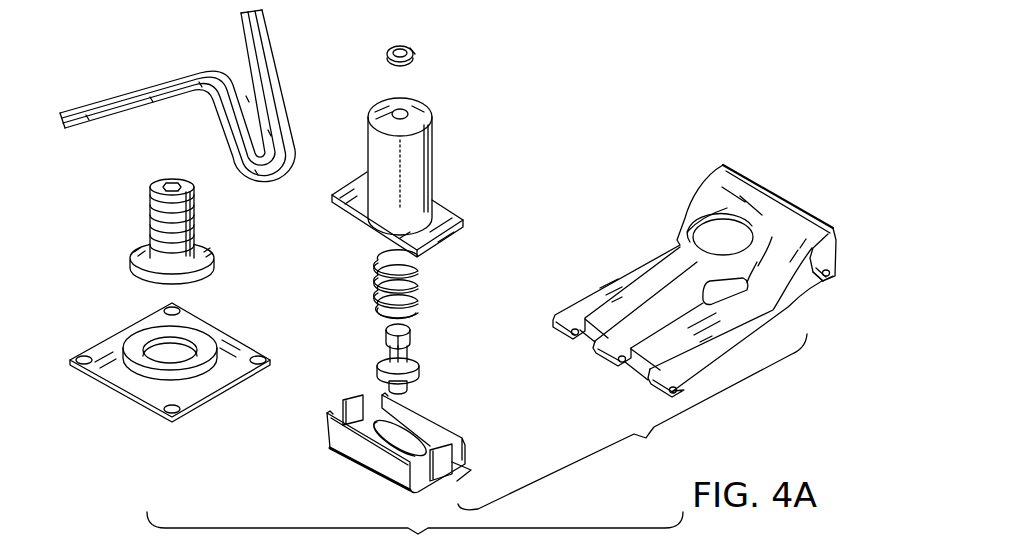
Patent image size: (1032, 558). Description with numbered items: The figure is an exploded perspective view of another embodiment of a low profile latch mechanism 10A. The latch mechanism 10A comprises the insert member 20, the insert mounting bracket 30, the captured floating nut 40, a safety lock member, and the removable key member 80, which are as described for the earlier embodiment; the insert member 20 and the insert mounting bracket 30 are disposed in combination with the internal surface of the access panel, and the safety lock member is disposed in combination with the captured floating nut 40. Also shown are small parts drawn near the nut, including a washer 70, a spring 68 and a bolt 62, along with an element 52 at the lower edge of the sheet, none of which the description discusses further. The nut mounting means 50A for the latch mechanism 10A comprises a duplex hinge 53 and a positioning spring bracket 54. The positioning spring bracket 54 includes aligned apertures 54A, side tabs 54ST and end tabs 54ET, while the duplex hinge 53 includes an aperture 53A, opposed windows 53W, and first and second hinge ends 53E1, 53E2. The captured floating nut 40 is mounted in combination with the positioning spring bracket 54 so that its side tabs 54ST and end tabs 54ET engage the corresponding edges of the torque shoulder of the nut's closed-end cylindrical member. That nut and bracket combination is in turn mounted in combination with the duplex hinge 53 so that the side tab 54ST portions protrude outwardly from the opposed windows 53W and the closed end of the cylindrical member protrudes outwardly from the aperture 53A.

The removable key member 80 is at (183, 68).
The insert member 20 is at (206, 231).
The insert mounting bracket 30 is at (232, 324).
The washer 70 is at (414, 52).
The captured floating nut 40 is at (444, 134).
The spring 68 is at (424, 302).
The bolt with washer 62 is at (411, 347).
The positioning spring bracket 54 is at (407, 431).
The end tabs 54ET is at (330, 440).
The side tabs 54ST is at (351, 397).
The aligned apertures 54A is at (426, 442).
The duplex hinge 53 is at (729, 275).
The aperture 53A is at (760, 226).
The first hinge end 53E1 is at (834, 277).
The second hinge end 53E2 is at (632, 370).
The opposed windows 53W is at (712, 294).
The nut mounting means 50A is at (632, 422).
The low profile latch mechanism 10A is at (415, 535).
The base 52 is at (253, 554).